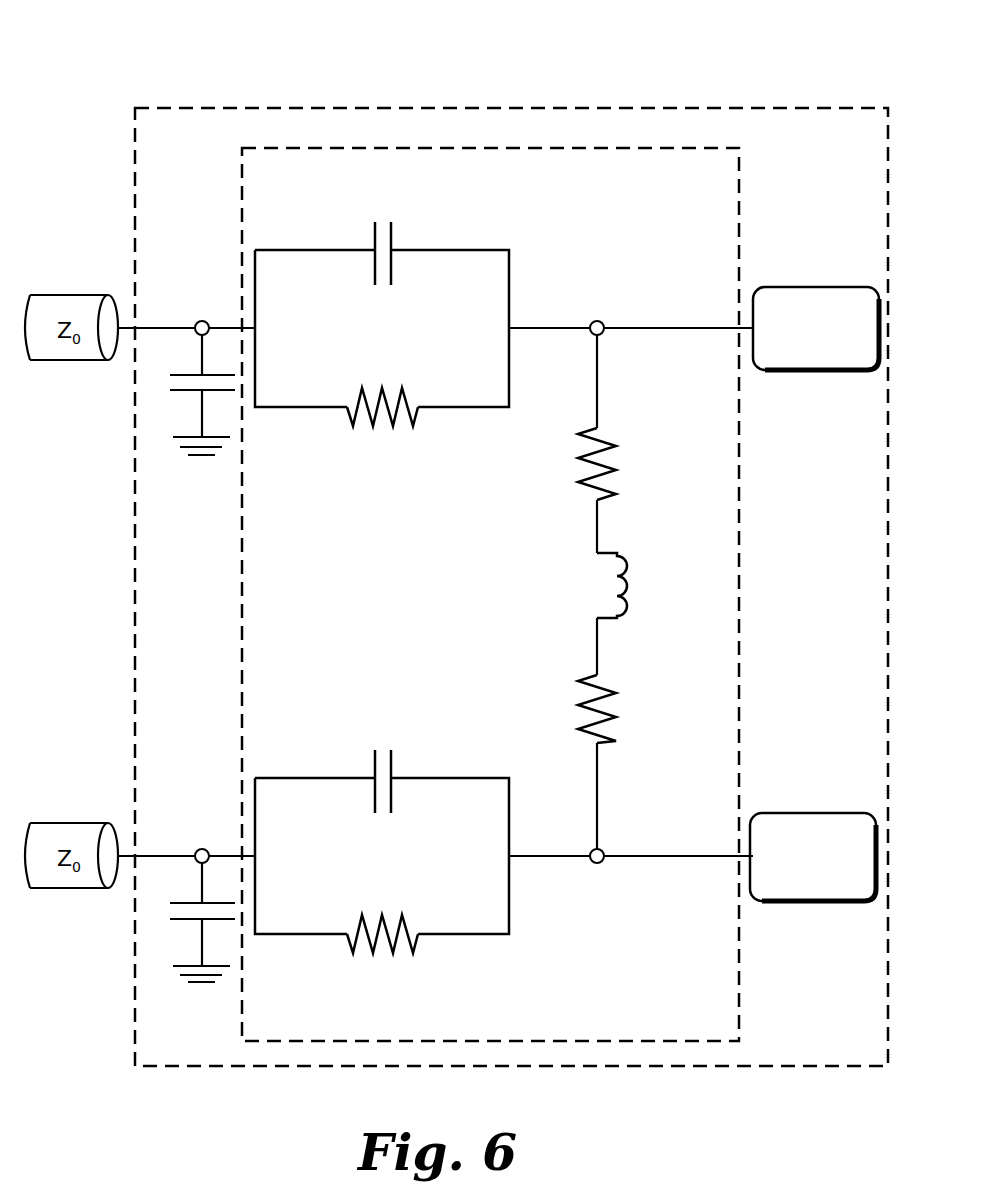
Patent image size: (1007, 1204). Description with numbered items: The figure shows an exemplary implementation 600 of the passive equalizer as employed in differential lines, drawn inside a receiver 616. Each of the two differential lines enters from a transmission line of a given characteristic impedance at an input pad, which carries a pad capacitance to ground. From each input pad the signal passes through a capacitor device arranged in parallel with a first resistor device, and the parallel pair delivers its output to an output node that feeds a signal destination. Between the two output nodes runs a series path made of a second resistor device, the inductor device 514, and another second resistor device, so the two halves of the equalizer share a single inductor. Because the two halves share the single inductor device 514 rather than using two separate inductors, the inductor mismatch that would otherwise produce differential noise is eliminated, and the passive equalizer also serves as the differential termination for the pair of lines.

The passive equalizer implementation 600 is at (593, 174).
The receiver 616 is at (573, 136).
The inductor device 514 is at (560, 548).